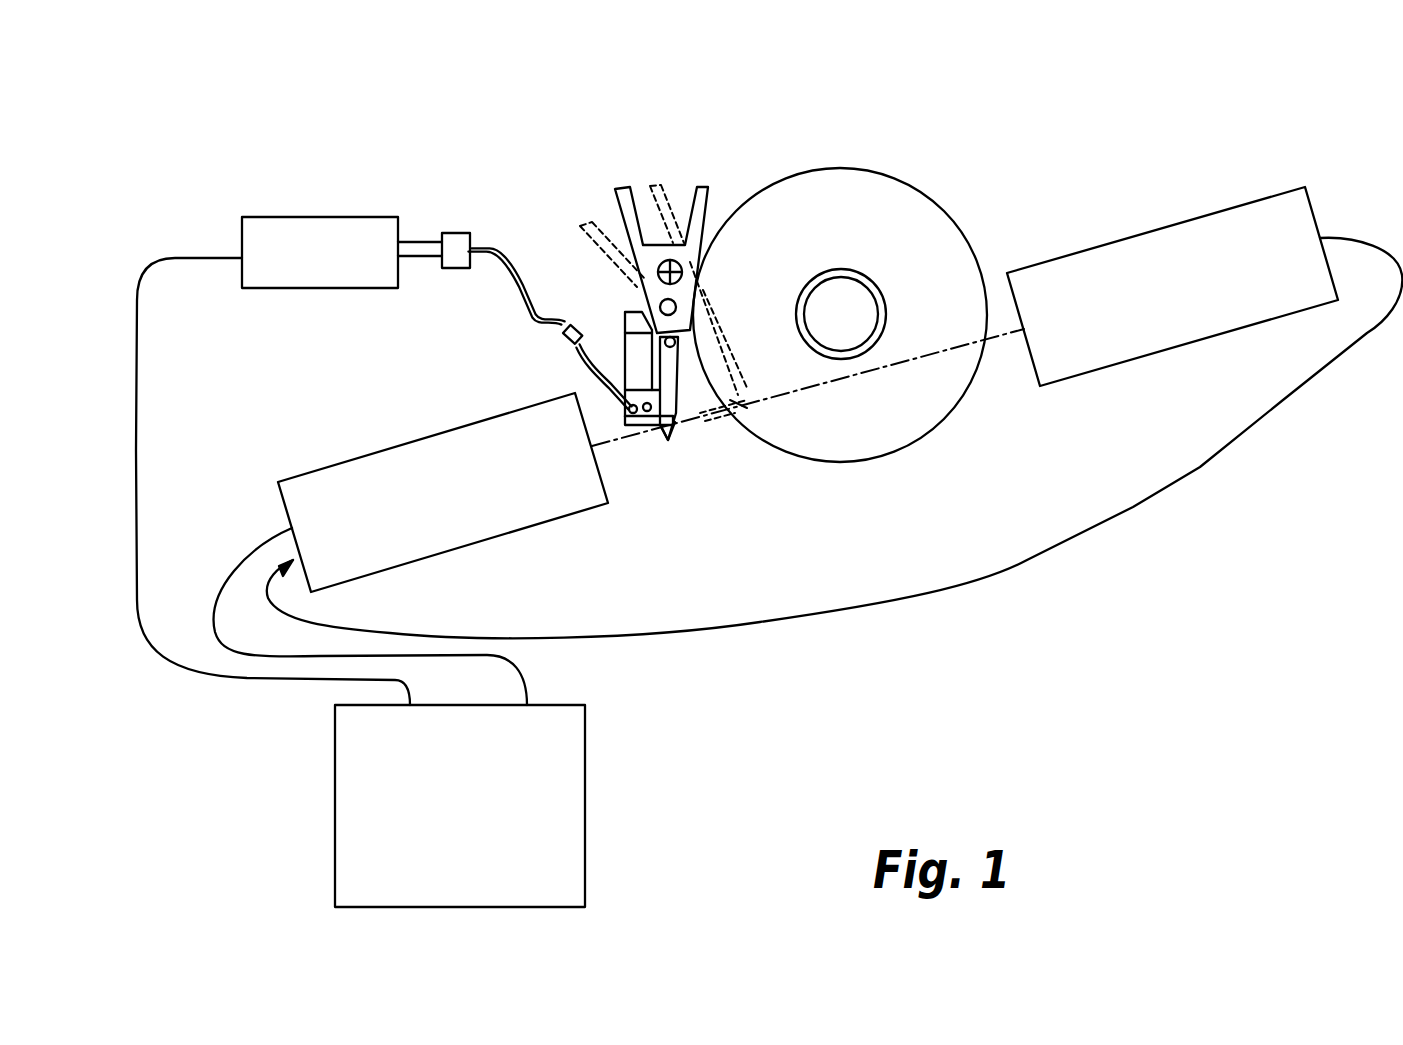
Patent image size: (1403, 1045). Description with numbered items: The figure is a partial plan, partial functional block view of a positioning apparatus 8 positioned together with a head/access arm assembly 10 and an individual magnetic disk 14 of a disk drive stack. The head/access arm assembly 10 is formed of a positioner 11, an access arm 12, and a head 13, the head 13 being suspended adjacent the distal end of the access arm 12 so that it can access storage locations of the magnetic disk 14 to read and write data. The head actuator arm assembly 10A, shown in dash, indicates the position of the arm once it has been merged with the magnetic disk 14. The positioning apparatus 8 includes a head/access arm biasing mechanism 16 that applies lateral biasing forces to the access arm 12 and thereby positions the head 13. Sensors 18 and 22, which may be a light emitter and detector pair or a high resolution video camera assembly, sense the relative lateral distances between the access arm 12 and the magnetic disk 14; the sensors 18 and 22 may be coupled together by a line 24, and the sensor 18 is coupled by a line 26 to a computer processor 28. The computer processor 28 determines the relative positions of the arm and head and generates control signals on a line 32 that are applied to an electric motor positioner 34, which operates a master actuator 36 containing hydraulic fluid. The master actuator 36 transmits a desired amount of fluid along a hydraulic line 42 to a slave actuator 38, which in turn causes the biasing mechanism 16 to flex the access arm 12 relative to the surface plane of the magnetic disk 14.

The positioning apparatus 8 is at (1215, 745).
The head/access arm assembly 10 is at (628, 180).
The head actuator arm assembly 10A is at (672, 170).
The positioner 11 is at (615, 207).
The access arm 12 is at (678, 360).
The head 13 is at (668, 432).
The magnetic disk 14 is at (897, 192).
The head/access arm biasing mechanism 16 is at (623, 355).
The sensor 18 is at (455, 440).
The sensor 22 is at (1100, 245).
The line 24 is at (1133, 507).
The line 26 is at (232, 576).
The computer processor 28 is at (585, 773).
The line 32 is at (247, 678).
The electric motor positioner 34 is at (348, 217).
The master actuator 36 is at (450, 233).
The slave actuator 38 is at (623, 413).
The hydraulic line 42 is at (517, 283).